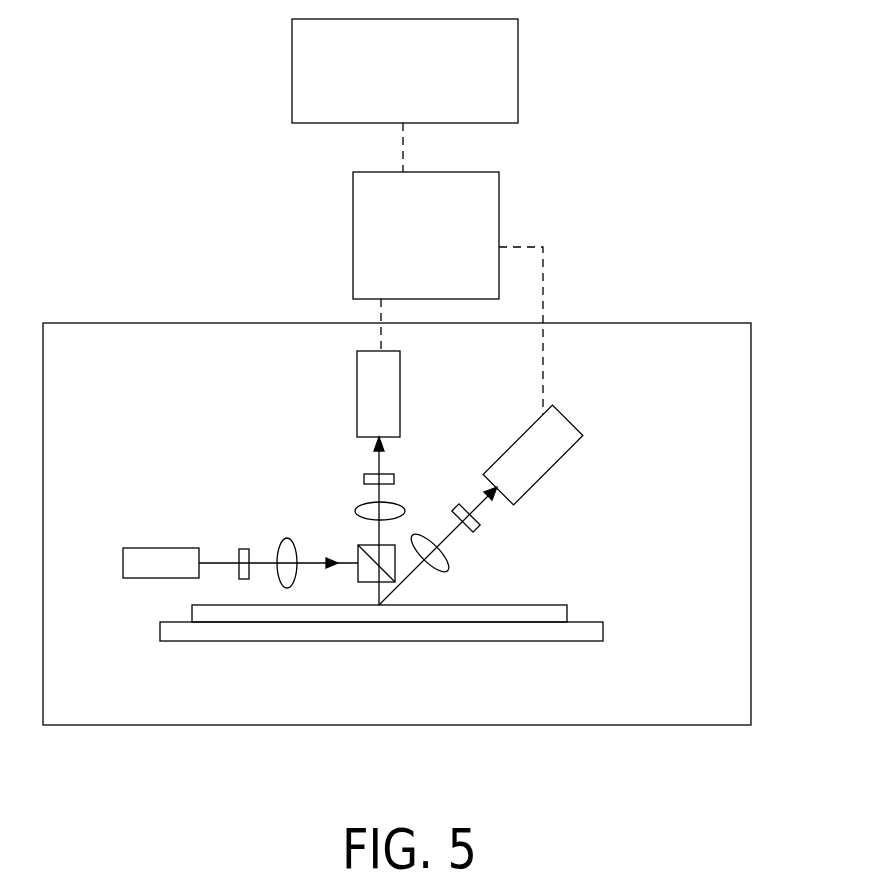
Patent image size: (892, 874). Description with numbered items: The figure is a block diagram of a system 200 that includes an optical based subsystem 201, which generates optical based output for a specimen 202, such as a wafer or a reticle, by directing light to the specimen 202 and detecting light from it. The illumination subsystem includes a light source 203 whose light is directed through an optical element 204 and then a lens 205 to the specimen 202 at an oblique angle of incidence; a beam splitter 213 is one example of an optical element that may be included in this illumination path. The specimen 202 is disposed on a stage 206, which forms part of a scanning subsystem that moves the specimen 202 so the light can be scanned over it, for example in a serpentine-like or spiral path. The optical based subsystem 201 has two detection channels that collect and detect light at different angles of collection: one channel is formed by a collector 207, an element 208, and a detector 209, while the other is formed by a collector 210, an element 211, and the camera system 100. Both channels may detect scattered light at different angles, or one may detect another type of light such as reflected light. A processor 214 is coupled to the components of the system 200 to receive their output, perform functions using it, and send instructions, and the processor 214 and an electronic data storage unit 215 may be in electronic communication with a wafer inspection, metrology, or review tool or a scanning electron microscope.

The system 200 is at (182, 91).
The optical based subsystem 201 is at (752, 343).
The specimen 202 is at (192, 607).
The light source 203 is at (130, 548).
The optical element 204 is at (241, 548).
The lens 205 is at (283, 537).
The stage 206 is at (160, 630).
The collector 207 is at (358, 507).
The element 208 is at (364, 477).
The detector 209 is at (357, 395).
The collector 210 is at (450, 570).
The element 211 is at (475, 533).
The beam splitter 213 is at (370, 545).
The processor 214 is at (447, 247).
The electronic data storage unit 215 is at (405, 71).
The camera system 100 is at (563, 455).